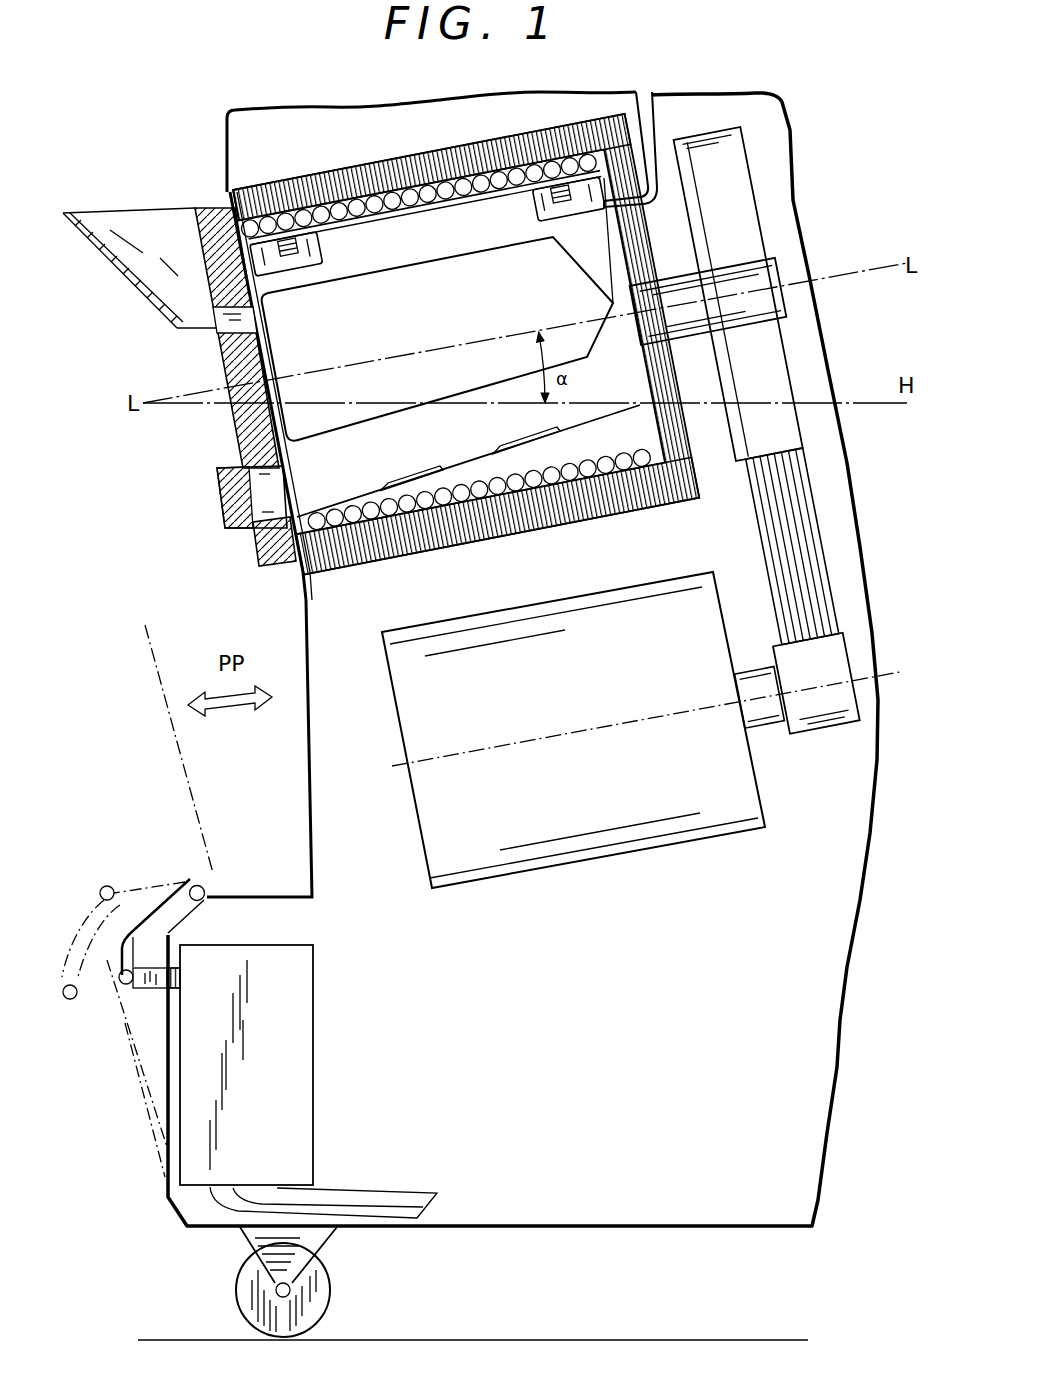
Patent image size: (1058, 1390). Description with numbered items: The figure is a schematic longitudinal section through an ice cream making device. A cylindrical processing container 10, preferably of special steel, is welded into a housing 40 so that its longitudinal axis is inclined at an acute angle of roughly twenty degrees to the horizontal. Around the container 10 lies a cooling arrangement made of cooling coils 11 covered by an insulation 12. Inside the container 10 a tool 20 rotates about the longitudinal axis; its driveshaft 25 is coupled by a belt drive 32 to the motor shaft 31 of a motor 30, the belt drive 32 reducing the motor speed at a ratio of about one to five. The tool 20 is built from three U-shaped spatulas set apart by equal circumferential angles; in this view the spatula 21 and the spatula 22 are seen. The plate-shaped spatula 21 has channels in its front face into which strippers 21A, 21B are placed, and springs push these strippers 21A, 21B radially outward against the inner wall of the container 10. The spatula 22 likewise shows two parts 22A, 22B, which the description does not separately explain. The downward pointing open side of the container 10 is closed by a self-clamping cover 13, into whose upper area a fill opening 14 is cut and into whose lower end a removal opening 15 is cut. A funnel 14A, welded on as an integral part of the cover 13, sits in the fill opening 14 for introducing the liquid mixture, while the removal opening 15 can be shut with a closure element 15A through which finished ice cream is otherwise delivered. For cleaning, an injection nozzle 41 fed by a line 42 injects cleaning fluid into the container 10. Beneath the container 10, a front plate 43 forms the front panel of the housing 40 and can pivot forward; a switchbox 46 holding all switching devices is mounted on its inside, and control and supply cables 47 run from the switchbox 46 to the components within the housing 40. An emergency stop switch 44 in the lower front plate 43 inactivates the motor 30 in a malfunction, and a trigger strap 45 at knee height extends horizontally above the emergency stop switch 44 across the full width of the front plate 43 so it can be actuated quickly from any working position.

The processing container 10 is at (660, 463).
The cooling coils 11 is at (490, 503).
The insulation 12 is at (430, 540).
The self-clamping cover 13 is at (233, 436).
The fill opening 14 is at (225, 340).
The funnel 14A is at (160, 222).
The removal opening 15 is at (270, 500).
The closure element 15A is at (236, 530).
The tool 20 is at (382, 413).
The spatula 21 is at (406, 250).
The stripper 21A is at (283, 274).
The stripper 21B is at (553, 218).
The spatula 22 is at (456, 440).
The left spacer wedge 22A is at (406, 477).
The right spacer wedge 22B is at (568, 439).
The driveshaft 25 is at (772, 273).
The motor 30 is at (577, 685).
The motor shaft 31 is at (770, 728).
The belt drive 32 is at (832, 545).
The housing 40 is at (780, 103).
The injection nozzle 41 is at (617, 205).
The line 42 is at (650, 122).
The front plate 43 is at (308, 840).
The emergency stop switch 44 is at (157, 992).
The trigger strap 45 is at (160, 903).
The switchbox 46 is at (298, 1048).
The control and supply cables 47 is at (378, 1190).